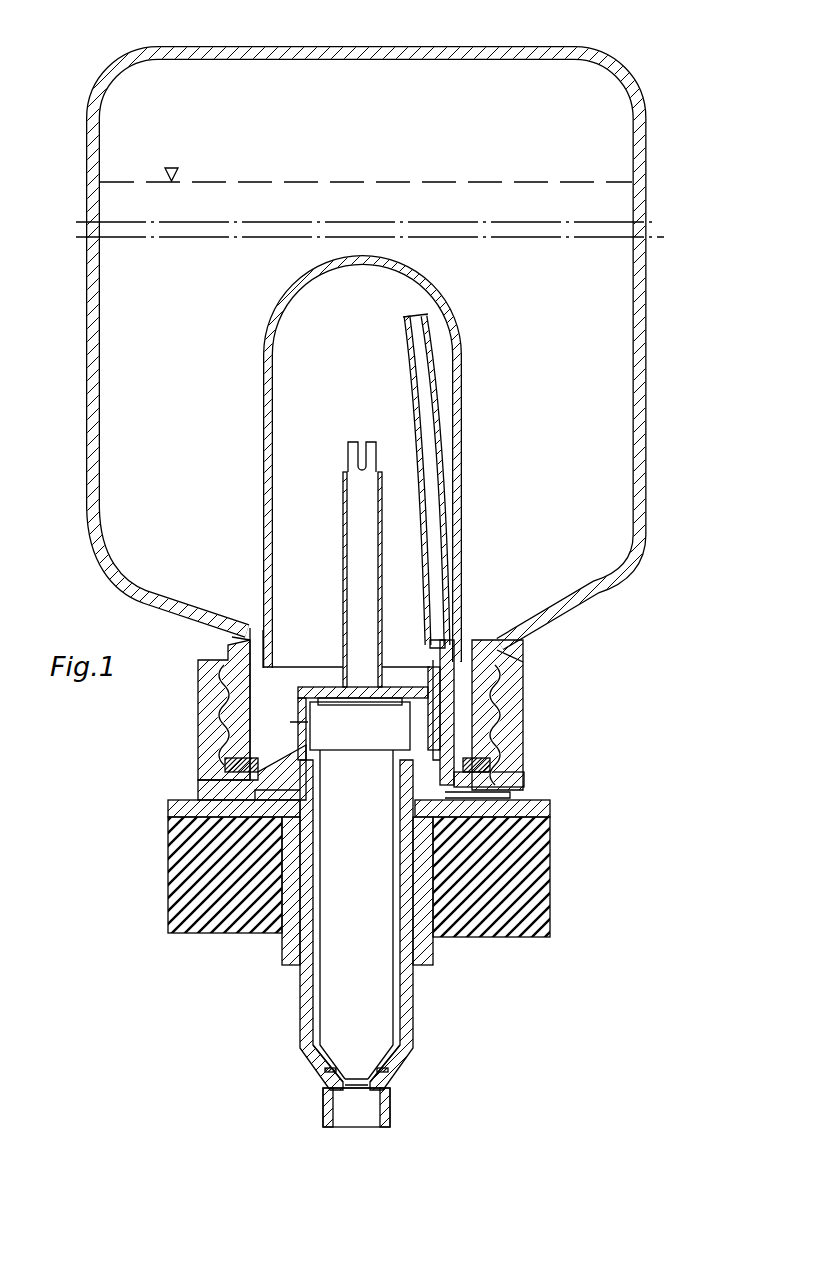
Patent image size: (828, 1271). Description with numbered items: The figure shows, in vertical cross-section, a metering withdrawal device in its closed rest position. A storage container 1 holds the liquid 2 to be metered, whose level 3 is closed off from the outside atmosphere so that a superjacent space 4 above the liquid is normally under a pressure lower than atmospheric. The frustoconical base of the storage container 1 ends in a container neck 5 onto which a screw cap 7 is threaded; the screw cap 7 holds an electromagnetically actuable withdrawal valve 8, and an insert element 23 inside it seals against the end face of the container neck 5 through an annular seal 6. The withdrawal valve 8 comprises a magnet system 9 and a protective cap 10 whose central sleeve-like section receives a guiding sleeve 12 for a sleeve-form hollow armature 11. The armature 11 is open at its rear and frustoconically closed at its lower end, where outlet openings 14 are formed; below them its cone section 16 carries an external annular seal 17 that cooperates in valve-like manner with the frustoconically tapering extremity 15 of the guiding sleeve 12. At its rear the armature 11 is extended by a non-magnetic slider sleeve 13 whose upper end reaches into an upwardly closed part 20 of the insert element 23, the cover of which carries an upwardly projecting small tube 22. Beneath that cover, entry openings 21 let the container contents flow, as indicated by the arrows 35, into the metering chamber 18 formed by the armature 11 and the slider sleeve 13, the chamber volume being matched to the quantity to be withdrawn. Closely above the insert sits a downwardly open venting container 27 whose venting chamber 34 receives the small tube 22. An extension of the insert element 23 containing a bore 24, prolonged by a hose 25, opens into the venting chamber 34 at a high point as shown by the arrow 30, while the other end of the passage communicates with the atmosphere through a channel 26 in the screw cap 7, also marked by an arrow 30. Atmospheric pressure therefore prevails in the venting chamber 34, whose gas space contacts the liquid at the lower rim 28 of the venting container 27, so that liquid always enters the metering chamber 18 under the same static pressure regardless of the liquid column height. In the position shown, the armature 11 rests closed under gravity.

The storage container 1 is at (78, 561).
The liquid 2 is at (108, 410).
The liquid level 3 is at (182, 167).
The superjacent space 4 is at (355, 416).
The container neck 5 is at (226, 680).
The annular seal 6 is at (225, 765).
The screw cap 7 is at (200, 712).
The withdrawal valve 8 is at (317, 692).
The magnet system 9 is at (180, 912).
The protective cap 10 is at (168, 806).
The hollow armature 11 is at (306, 1002).
The guiding sleeve 12 is at (296, 978).
The slider sleeve 13 is at (314, 873).
The outlet openings 14 is at (322, 1062).
The frustoconically tapering extremity 15 is at (372, 1118).
The cone section 16 is at (390, 1078).
The external annular seal 17 is at (380, 1066).
The metering chamber 18 is at (370, 834).
The upwardly closed part of insert 20 is at (318, 685).
The entry openings 21 is at (305, 714).
The small tube 22 is at (342, 575).
The insert element 23 is at (450, 742).
The bore 24 is at (440, 690).
The hose 25 is at (452, 505).
The channel 26 is at (495, 790).
The venting container 27 is at (465, 348).
The lower rim 28 is at (262, 672).
The arrow 30 is at (372, 320).
The venting chamber 34 is at (362, 378).
The arrows 35 is at (232, 637).